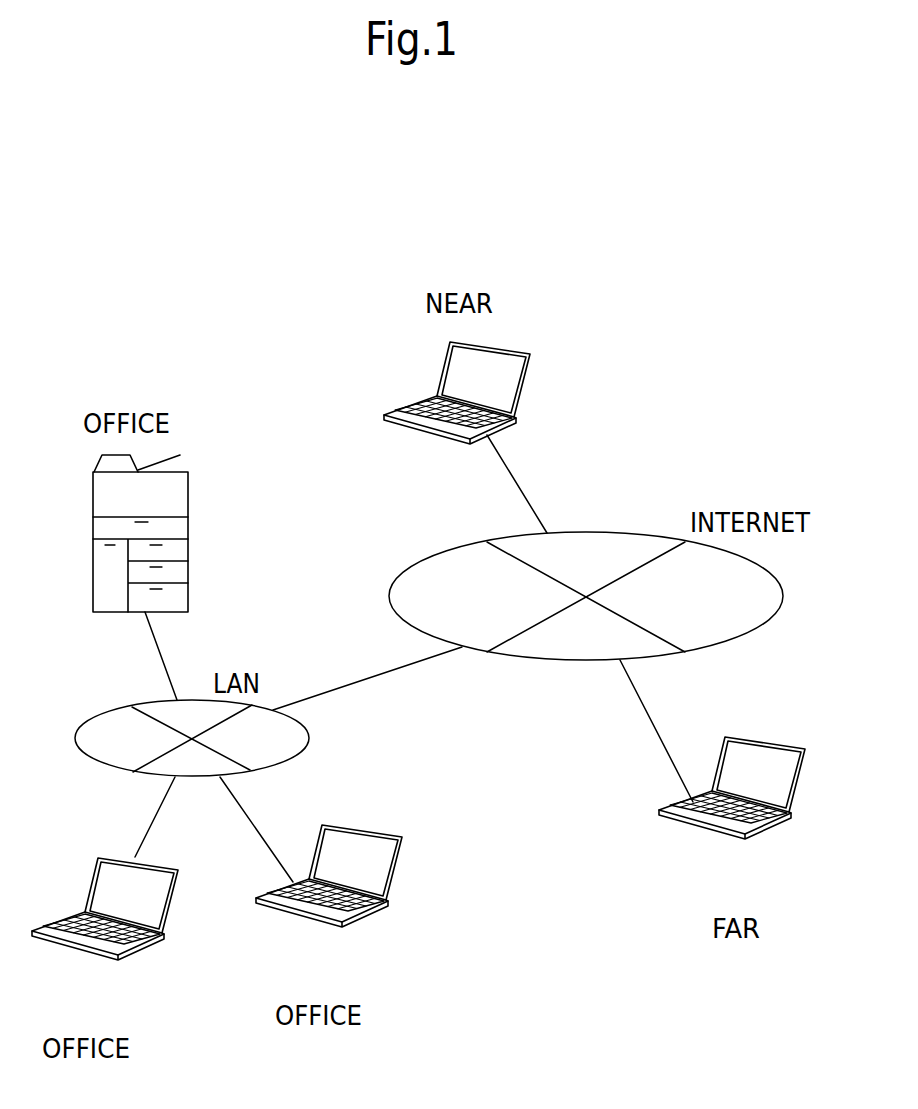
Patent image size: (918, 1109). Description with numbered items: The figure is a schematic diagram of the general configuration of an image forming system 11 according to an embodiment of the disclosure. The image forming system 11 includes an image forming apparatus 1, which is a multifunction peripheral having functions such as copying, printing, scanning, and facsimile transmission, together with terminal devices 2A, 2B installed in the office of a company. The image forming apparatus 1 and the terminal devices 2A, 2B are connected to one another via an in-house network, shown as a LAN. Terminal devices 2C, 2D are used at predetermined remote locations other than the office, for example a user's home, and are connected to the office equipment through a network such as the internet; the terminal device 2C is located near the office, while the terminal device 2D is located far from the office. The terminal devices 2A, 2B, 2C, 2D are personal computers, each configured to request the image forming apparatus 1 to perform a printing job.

The image forming apparatus 1 is at (188, 522).
The terminal device 2A is at (87, 955).
The terminal device 2B is at (307, 925).
The terminal device 2C is at (433, 438).
The terminal device 2D is at (712, 835).
The image forming system 11 is at (708, 358).